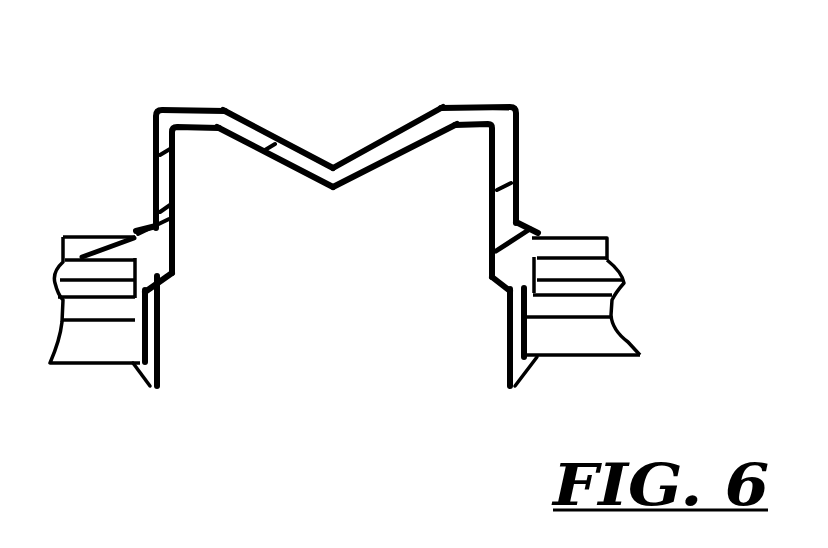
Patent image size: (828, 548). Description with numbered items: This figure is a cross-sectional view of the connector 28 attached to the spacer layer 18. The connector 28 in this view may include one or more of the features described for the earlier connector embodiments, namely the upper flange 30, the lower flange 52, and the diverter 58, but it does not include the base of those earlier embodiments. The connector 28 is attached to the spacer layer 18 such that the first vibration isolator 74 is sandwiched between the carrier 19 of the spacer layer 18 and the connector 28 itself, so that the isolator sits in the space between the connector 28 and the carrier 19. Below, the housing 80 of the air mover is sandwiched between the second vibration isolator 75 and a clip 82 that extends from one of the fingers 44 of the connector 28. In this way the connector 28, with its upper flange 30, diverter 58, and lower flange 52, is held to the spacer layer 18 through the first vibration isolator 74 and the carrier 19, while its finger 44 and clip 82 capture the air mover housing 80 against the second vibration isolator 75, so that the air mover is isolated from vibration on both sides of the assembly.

The connector 28 is at (337, 209).
The upper flange 30 is at (254, 124).
The diverter 58 is at (393, 141).
The lower flange 52 is at (175, 243).
The finger 44 is at (505, 325).
The clip 82 is at (533, 362).
The first vibration isolator 74 is at (603, 264).
The carrier 19 is at (627, 296).
The spacer layer 18 is at (603, 296).
The second vibration isolator 75 is at (595, 306).
The housing 80 is at (610, 337).